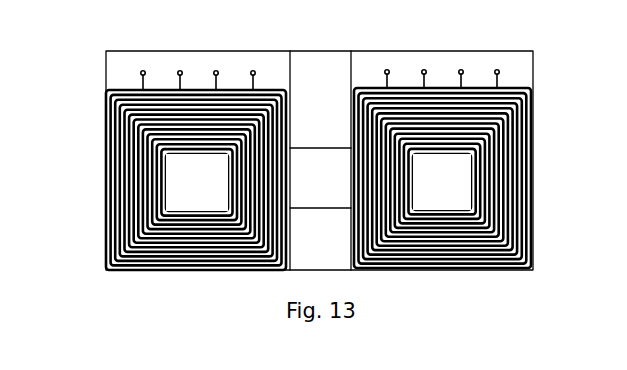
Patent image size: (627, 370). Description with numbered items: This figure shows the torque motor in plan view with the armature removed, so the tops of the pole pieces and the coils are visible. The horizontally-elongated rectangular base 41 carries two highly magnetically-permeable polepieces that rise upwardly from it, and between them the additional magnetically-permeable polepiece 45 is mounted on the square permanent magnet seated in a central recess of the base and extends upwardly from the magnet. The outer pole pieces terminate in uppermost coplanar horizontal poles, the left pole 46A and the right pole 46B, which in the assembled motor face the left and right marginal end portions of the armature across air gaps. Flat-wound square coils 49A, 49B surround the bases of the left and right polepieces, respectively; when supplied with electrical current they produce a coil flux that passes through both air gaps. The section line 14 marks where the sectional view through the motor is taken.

The base 41 is at (530, 263).
The polepiece 45 is at (299, 147).
The left pole 46A is at (330, 173).
The right pole 46B is at (570, 170).
The flat-wound square coil 49A is at (100, 212).
The flat-wound square coil 49B is at (520, 102).
The section line 14- 14 is at (92, 173).